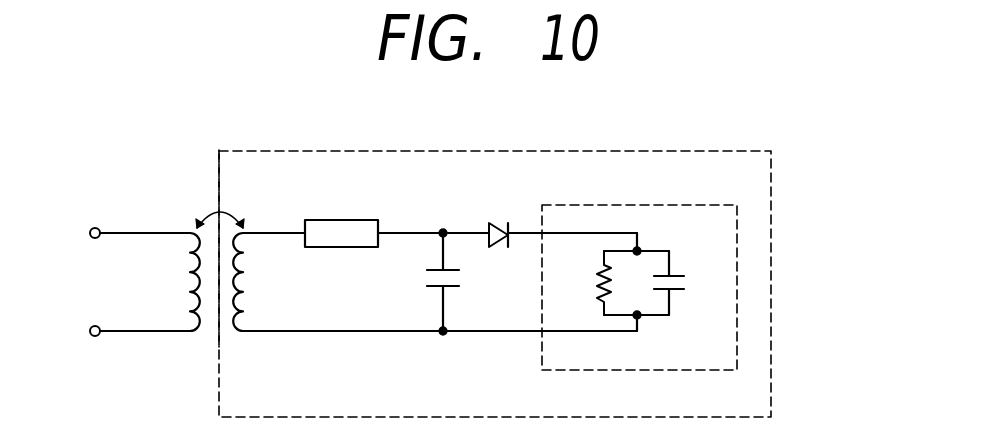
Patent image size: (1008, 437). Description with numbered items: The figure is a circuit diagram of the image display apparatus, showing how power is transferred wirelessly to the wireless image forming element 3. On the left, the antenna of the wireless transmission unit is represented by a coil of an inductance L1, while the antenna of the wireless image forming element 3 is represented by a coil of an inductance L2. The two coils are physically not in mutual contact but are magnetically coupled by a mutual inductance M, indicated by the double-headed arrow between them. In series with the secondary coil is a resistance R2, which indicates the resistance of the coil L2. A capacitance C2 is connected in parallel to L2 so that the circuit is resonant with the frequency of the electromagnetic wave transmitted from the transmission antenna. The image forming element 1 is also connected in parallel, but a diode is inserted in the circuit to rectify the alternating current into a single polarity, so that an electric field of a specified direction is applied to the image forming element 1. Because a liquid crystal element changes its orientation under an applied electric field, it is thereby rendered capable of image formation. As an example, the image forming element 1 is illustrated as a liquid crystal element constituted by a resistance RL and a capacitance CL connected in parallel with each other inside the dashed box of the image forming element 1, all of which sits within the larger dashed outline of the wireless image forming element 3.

The image forming element 1 is at (692, 287).
The wireless image forming element 3 is at (762, 393).
The inductance L1 is at (176, 282).
The inductance L2 is at (255, 282).
The mutual inductance M is at (220, 201).
The resistance R2 is at (341, 214).
The capacitance C2 is at (425, 282).
The resistance RL is at (584, 283).
The capacitance CL is at (689, 283).